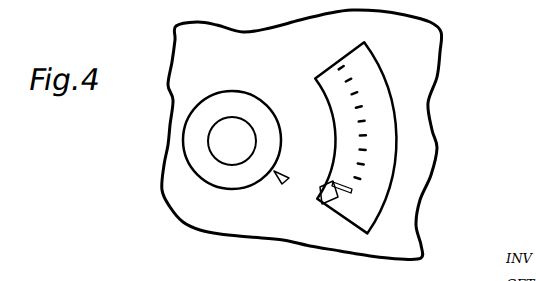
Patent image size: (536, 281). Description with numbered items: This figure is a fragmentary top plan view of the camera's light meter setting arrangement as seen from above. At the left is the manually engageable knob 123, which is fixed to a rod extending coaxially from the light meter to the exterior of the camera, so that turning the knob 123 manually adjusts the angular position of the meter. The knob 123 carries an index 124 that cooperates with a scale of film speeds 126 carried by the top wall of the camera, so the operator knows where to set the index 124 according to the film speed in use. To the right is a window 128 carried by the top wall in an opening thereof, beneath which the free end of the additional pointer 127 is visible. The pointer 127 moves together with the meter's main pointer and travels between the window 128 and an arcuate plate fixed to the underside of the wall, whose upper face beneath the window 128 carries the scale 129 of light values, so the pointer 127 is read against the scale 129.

The manually engageable knob 123 is at (223, 135).
The index 124 is at (278, 178).
The scale of film speeds 126 is at (298, 112).
The additional pointer 127 is at (325, 203).
The window 128 is at (397, 137).
The scale of light values 129 is at (373, 100).